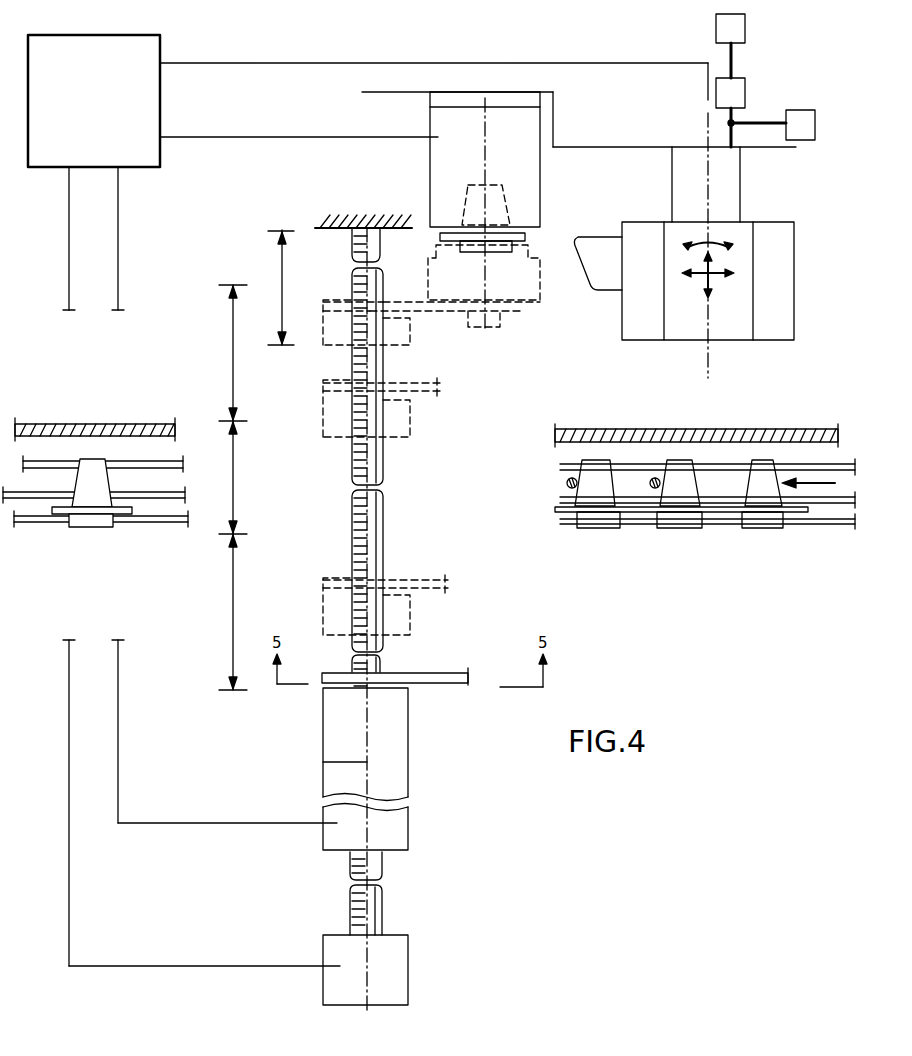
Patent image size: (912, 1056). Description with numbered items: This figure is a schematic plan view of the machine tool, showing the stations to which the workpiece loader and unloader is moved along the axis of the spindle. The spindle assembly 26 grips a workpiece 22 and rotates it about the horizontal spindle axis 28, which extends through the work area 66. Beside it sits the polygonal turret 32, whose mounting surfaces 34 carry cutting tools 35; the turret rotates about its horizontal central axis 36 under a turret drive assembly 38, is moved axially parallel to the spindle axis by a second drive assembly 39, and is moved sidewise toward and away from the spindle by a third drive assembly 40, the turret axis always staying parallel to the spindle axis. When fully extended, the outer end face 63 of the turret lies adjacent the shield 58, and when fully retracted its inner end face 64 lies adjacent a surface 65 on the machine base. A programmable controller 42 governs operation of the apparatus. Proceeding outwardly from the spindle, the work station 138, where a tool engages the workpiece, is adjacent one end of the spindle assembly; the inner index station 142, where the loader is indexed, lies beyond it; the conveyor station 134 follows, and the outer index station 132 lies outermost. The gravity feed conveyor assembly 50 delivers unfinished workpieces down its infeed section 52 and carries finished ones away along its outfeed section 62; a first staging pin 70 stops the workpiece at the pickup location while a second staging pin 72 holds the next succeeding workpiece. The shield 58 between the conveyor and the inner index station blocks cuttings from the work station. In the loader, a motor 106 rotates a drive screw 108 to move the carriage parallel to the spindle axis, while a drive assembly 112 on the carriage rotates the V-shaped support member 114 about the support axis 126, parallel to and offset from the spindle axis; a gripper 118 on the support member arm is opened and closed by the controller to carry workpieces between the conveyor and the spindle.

The workpiece 22 is at (97, 524).
The spindle assembly 26 is at (527, 172).
The spindle axis 28 is at (480, 133).
The polygonal turret 32 is at (778, 303).
The mounting surfaces 34 is at (622, 312).
The cutting tools 35 is at (606, 237).
The turret central axis 36 is at (716, 352).
The turret drive assembly 38 is at (732, 29).
The second drive assembly 39 is at (740, 96).
The third drive assembly 40 is at (800, 124).
The controller 42 is at (100, 110).
The conveyor assembly 50 is at (857, 456).
The infeed section 52 is at (820, 526).
The shield 58 is at (97, 424).
The outfeed section 62 is at (35, 524).
The outer end face 63 is at (778, 342).
The inner end face 64 is at (775, 222).
The base surface 65 is at (778, 148).
The work area 66 is at (522, 598).
The first staging pin 70 is at (566, 481).
The second staging pin 72 is at (655, 478).
The motor 106 is at (398, 967).
The drive screw 108 is at (372, 520).
The drive assembly 112 is at (335, 352).
The support member 114 is at (338, 300).
The gripper 118 is at (532, 290).
The support axis 126 is at (320, 762).
The outer index station 132 is at (232, 600).
The conveyor station 134 is at (235, 473).
The work station 138 is at (278, 292).
The inner index station 142 is at (230, 345).